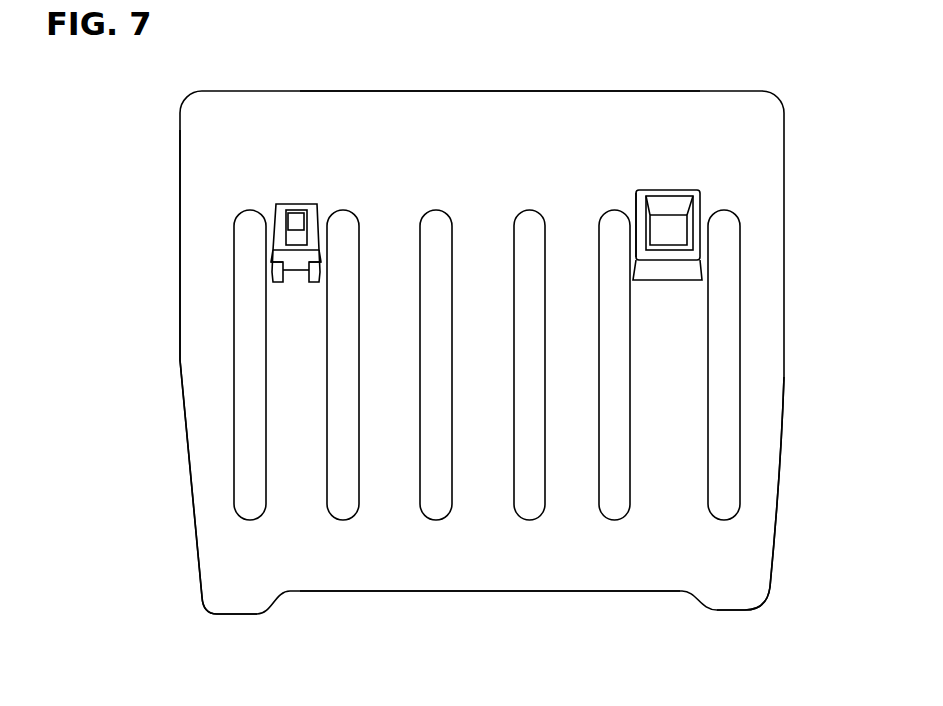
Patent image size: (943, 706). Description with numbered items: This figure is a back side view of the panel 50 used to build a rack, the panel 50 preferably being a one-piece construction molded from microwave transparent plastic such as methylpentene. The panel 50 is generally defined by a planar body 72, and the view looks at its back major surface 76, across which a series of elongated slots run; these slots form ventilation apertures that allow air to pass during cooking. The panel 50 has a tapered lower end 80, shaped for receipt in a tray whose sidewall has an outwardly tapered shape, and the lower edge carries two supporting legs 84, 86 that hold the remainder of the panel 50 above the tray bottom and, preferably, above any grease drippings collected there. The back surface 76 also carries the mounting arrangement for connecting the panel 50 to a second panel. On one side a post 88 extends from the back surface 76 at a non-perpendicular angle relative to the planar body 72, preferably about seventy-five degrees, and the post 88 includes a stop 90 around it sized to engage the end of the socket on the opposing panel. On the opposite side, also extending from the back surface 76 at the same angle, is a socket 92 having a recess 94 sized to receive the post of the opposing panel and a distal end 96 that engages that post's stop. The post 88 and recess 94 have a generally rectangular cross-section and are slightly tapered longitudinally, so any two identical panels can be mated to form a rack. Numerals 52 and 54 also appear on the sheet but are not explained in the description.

The panel 50 is at (145, 200).
The top wall 52 is at (433, 90).
The bottom wall 54 is at (470, 591).
The planar body 72 is at (180, 360).
The back major surface 76 is at (466, 143).
The tapered lower end 80 is at (188, 477).
The supporting leg 84 is at (733, 610).
The supporting leg 86 is at (238, 613).
The post 88 is at (314, 253).
The stop 90 is at (280, 275).
The socket 92 is at (673, 199).
The recess 94 is at (667, 197).
The distal end 96 is at (650, 188).